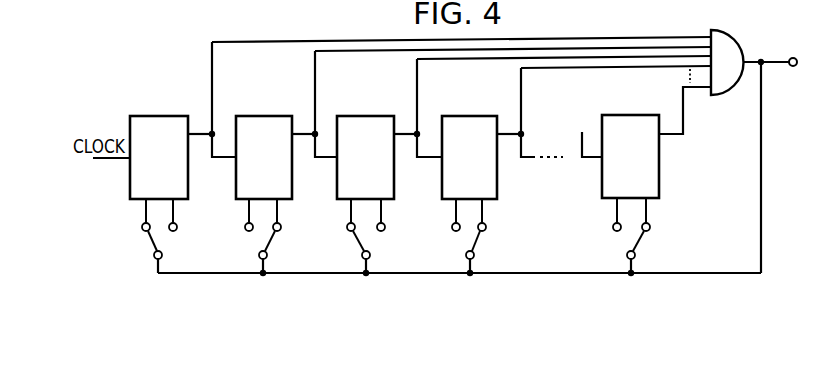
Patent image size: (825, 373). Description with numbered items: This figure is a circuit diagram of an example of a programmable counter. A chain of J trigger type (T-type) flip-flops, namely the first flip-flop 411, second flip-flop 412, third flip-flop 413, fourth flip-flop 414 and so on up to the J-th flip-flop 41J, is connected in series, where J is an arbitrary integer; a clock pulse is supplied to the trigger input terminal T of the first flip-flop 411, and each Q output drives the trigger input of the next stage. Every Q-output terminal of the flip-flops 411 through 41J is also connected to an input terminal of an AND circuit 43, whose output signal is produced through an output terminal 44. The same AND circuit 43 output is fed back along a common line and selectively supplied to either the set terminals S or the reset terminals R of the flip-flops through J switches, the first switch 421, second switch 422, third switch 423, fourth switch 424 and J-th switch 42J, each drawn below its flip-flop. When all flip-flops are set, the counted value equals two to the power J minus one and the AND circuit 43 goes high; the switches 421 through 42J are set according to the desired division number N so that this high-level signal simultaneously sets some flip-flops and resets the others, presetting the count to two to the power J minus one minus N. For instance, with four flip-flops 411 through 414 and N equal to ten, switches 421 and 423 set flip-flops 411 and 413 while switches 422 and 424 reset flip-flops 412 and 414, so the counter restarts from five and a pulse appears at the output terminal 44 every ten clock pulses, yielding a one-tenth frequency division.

The first trigger type flip-flop 411 is at (149, 115).
The second trigger type flip-flop 412 is at (259, 115).
The third trigger type flip-flop 413 is at (365, 115).
The fourth trigger type flip-flop 414 is at (467, 115).
The J-th trigger type flip-flop 41J is at (622, 113).
The first switch 421 is at (163, 238).
The second switch 422 is at (272, 238).
The third switch 423 is at (370, 237).
The fourth switch 424 is at (477, 238).
The J-th switch 42J is at (641, 238).
The AND circuit 43 is at (729, 91).
The output terminal 44 is at (796, 66).